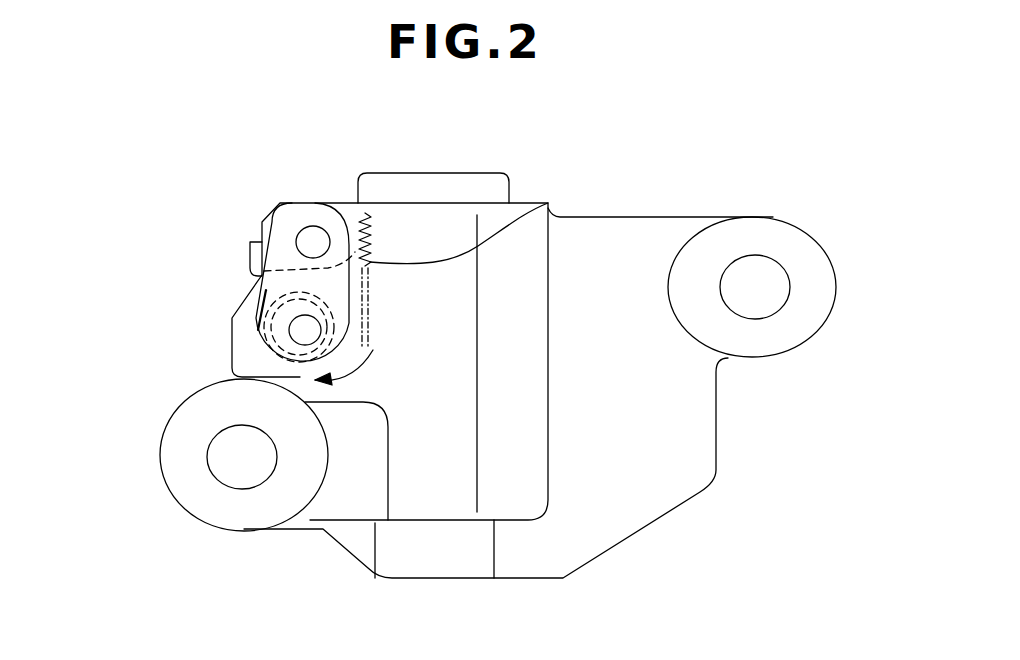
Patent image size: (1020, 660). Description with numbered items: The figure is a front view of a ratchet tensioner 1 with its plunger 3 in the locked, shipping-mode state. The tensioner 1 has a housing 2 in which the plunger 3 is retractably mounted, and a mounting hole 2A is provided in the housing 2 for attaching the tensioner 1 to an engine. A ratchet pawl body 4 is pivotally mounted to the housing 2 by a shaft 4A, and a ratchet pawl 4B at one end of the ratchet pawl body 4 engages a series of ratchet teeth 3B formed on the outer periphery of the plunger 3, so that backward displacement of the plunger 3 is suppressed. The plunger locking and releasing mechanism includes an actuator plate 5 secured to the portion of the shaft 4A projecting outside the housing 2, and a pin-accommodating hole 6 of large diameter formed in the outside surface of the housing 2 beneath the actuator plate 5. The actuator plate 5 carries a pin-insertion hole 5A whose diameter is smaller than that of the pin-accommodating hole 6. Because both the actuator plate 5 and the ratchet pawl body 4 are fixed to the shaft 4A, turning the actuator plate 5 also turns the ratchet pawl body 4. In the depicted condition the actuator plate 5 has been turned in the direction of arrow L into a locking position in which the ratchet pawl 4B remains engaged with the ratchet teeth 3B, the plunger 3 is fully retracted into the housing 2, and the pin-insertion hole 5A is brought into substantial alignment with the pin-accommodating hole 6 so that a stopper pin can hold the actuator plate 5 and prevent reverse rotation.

The ratchet tensioner 1 is at (622, 202).
The housing 2 is at (678, 432).
The mounting hole 2A is at (220, 457).
The plunger 3 is at (468, 190).
The ratchet teeth 3B is at (540, 207).
The ratchet pawl body 4 is at (348, 203).
The shaft 4A is at (313, 230).
The ratchet pawl 4B is at (388, 209).
The actuator plate 5 is at (293, 285).
The pin-insertion hole 5A is at (297, 340).
The pin-accommodating hole 6 is at (258, 328).
The arrow L is at (367, 362).